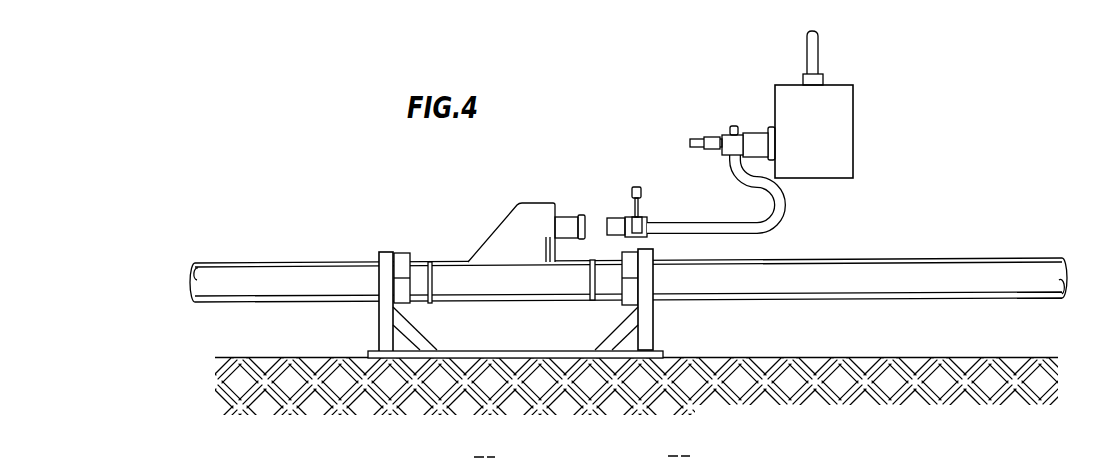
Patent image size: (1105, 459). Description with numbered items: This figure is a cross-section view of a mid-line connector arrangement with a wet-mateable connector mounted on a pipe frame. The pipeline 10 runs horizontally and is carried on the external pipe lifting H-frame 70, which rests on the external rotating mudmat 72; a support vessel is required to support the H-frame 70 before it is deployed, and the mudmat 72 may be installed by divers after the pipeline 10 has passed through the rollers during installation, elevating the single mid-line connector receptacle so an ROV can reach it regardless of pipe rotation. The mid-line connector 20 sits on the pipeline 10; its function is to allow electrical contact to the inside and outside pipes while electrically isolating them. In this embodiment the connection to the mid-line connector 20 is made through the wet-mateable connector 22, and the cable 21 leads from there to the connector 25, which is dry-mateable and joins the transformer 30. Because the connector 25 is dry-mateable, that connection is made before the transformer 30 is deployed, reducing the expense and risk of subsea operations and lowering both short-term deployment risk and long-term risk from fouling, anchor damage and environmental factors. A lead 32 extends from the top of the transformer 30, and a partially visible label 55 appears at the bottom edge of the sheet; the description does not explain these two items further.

The pipeline 10 is at (344, 278).
The mid-line connector 20 is at (507, 240).
The cable 21 is at (783, 214).
The wet-mateable connector 22 is at (613, 217).
The connector 25 is at (757, 133).
The transformer 30 is at (838, 128).
The cable 32 is at (818, 53).
The pipe lifting H-frame 70 is at (379, 326).
The rotating mudmat 72 is at (683, 354).
The reference numeral (partially visible) 55 is at (589, 450).